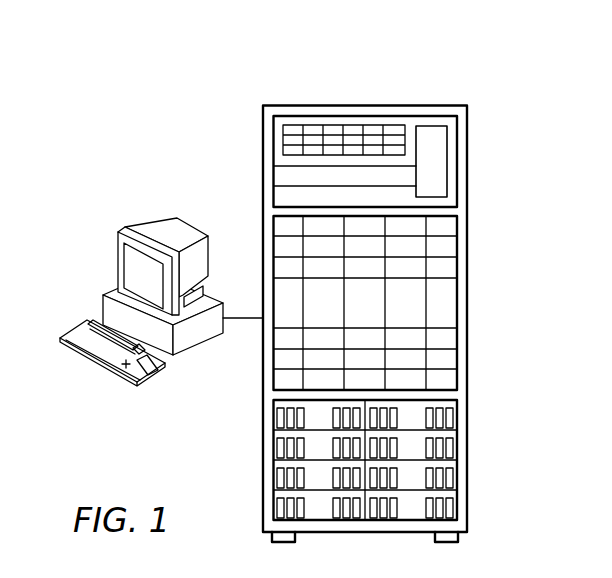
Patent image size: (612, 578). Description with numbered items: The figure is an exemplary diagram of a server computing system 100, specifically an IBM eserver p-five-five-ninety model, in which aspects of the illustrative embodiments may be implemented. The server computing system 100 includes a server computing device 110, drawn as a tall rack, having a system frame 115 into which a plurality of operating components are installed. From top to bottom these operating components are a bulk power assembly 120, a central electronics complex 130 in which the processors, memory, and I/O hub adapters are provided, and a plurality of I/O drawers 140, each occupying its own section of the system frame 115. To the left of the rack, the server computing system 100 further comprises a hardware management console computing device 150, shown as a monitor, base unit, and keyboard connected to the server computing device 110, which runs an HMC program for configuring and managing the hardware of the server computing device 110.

The server computing system 100 is at (195, 75).
The server computing device 110 is at (434, 99).
The system frame 115 is at (262, 445).
The bulk power assembly 120 is at (470, 114).
The central electronics complex 130 is at (470, 217).
The I/O drawers 140 is at (470, 399).
The hardware management console computing device 150 is at (147, 232).